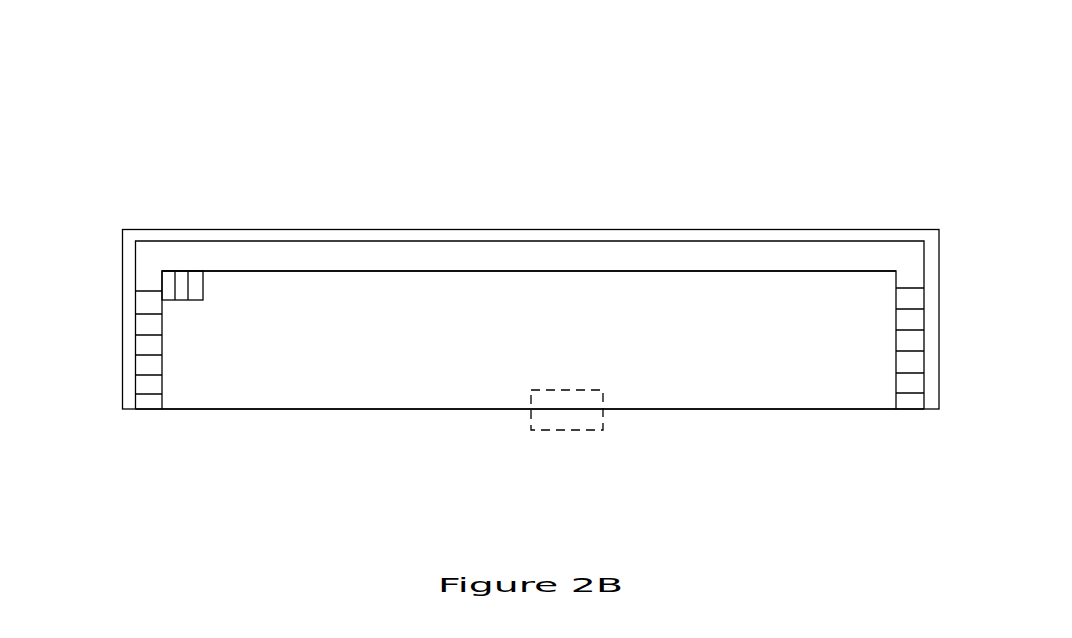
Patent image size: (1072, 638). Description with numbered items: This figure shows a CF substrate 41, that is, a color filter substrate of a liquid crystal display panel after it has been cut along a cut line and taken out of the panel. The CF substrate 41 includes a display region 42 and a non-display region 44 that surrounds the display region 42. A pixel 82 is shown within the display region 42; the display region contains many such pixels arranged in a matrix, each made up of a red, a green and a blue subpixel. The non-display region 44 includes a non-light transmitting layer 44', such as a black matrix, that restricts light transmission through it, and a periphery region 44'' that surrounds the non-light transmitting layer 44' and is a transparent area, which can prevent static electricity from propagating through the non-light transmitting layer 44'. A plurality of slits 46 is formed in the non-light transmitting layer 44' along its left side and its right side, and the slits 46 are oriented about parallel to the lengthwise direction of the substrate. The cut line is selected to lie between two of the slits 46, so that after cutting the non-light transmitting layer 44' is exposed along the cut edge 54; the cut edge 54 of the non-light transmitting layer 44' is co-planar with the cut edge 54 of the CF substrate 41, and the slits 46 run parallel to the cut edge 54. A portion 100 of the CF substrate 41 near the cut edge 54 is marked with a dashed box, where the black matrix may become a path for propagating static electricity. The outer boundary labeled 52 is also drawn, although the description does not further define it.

The CF substrate 41 is at (168, 57).
The outer housing 52 is at (311, 229).
The non-display region 44 is at (530, 221).
The non-light transmitting layer 44' is at (529, 208).
The periphery region 44'' is at (530, 262).
The display region 42 is at (610, 362).
The slits 46 is at (928, 351).
The pixel 82 is at (181, 266).
The cut edge 54 is at (292, 414).
The portion 100 is at (563, 430).